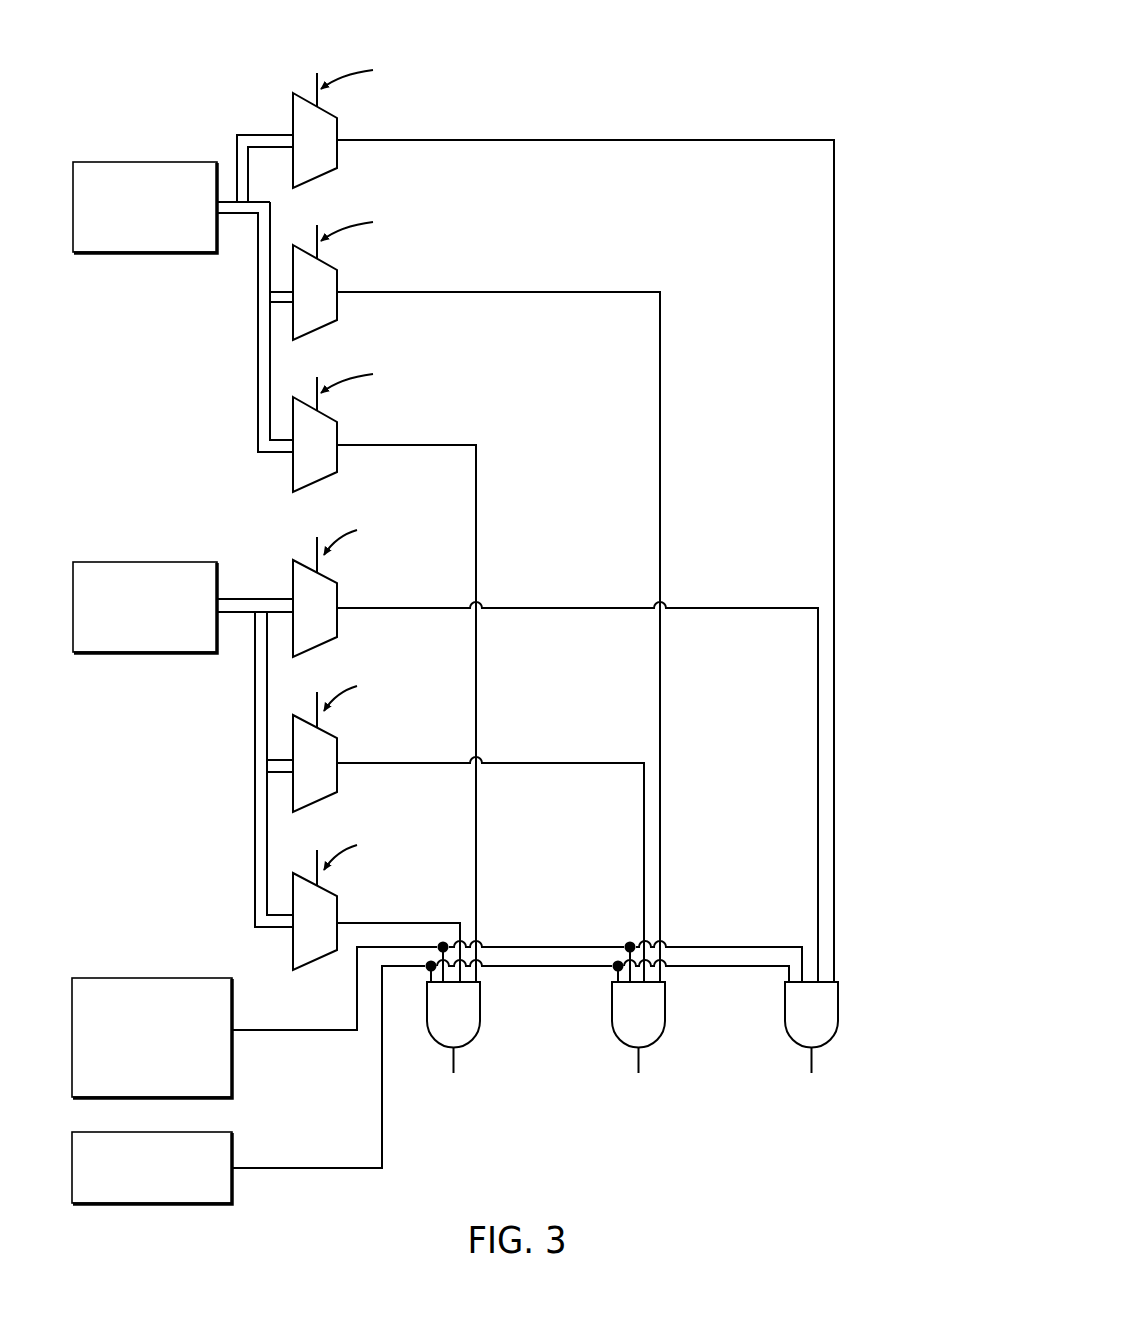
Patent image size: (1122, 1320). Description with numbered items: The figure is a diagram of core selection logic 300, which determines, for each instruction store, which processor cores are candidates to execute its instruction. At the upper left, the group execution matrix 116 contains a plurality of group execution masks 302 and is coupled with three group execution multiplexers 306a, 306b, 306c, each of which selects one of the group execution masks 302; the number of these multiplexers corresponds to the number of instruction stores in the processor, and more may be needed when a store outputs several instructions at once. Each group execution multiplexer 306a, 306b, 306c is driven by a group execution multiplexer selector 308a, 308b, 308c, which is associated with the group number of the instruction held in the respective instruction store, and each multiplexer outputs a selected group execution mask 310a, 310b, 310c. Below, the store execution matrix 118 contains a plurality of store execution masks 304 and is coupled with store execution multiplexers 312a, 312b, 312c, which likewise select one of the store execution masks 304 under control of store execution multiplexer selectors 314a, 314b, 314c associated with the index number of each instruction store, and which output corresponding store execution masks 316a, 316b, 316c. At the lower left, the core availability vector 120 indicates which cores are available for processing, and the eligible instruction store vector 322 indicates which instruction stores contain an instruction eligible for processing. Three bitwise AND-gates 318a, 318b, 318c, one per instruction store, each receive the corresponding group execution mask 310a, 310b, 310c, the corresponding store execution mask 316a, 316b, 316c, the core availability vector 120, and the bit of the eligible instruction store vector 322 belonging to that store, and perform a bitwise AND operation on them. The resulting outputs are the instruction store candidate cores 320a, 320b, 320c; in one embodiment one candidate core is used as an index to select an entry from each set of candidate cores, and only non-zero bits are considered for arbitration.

The core selection logic 300 is at (694, 98).
The group execution matrix 116 is at (140, 161).
The store execution matrix 118 is at (140, 561).
The core availability vector 120 is at (139, 977).
The group execution masks 302 is at (257, 320).
The store execution masks 304 is at (254, 699).
The group execution multiplexer 306a is at (338, 121).
The group execution multiplexer 306b is at (338, 273).
The group execution multiplexer 306c is at (338, 425).
The group execution multiplexer selector 308a is at (466, 62).
The group execution multiplexer selector 308b is at (466, 214).
The group execution multiplexer selector 308c is at (466, 364).
The group execution mask 310a is at (543, 139).
The group execution mask 310b is at (543, 291).
The group execution mask 310c is at (478, 465).
The store execution multiplexer 312a is at (338, 586).
The store execution multiplexer 312b is at (338, 741).
The store execution multiplexer 312c is at (338, 901).
The store execution multiplexer selector 314a is at (397, 520).
The store execution multiplexer selector 314b is at (397, 682).
The store execution multiplexer selector 314c is at (397, 839).
The store execution mask 316a is at (563, 607).
The store execution mask 316b is at (563, 762).
The store execution mask 316c is at (441, 922).
The bitwise AND-gate 318a is at (839, 1011).
The bitwise AND-gate 318b is at (666, 1011).
The bitwise AND-gate 318c is at (481, 1011).
The instruction store candidate cores 320a is at (817, 1125).
The instruction store candidate cores 320b is at (643, 1125).
The instruction store candidate cores 320c is at (458, 1125).
The eligible instruction store vector 322 is at (301, 1167).